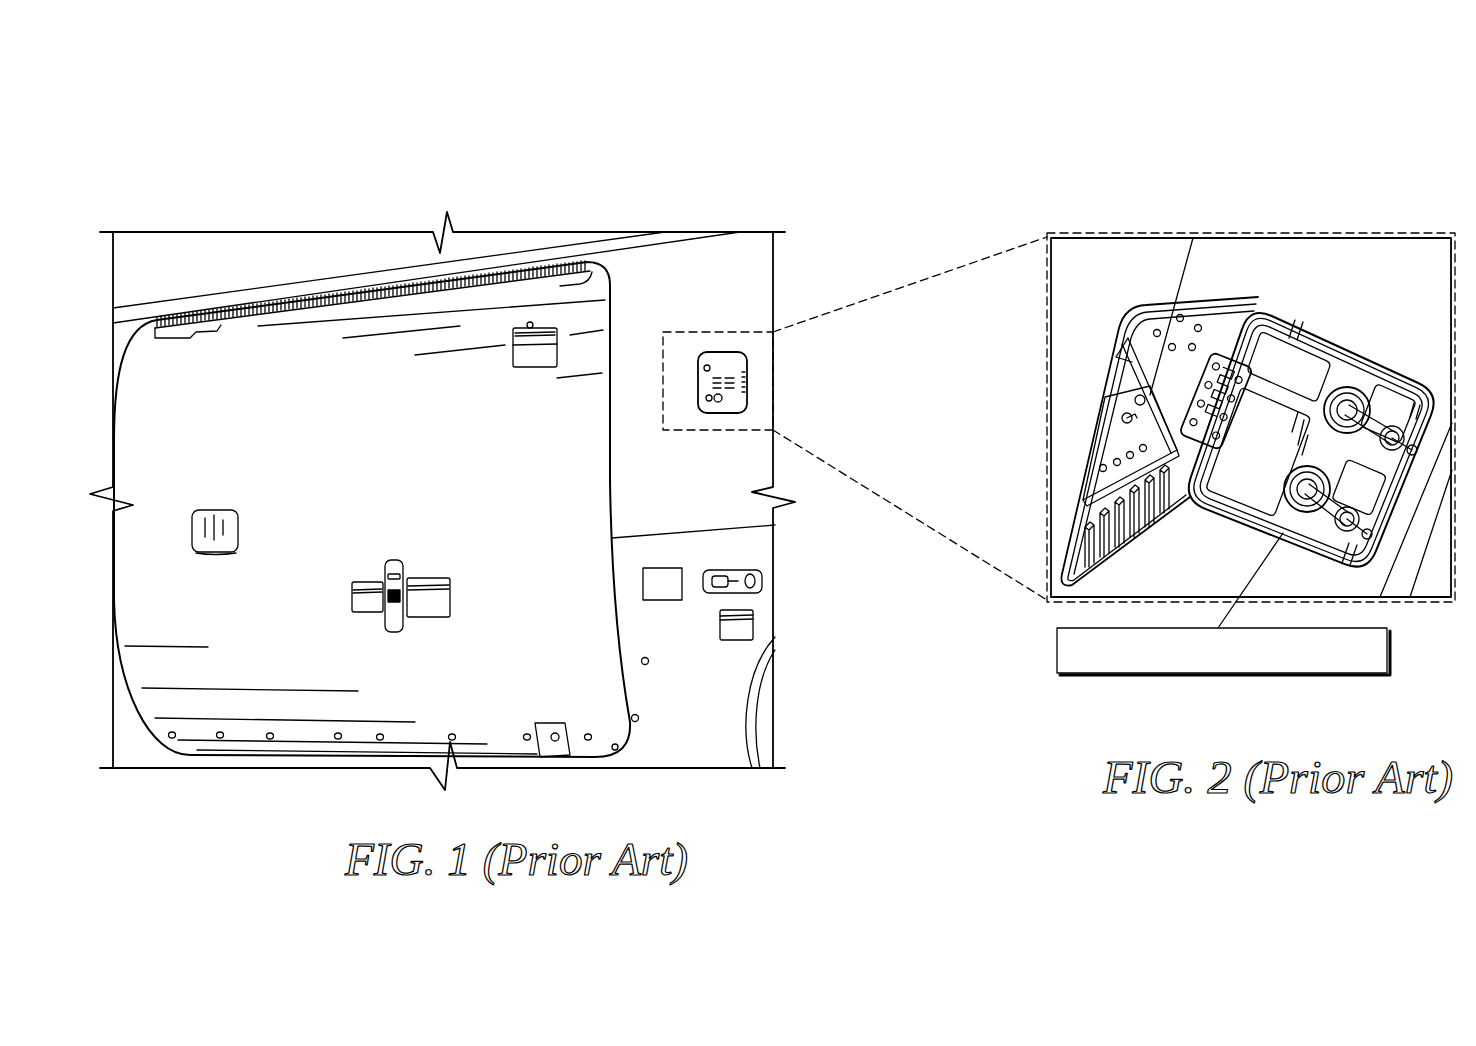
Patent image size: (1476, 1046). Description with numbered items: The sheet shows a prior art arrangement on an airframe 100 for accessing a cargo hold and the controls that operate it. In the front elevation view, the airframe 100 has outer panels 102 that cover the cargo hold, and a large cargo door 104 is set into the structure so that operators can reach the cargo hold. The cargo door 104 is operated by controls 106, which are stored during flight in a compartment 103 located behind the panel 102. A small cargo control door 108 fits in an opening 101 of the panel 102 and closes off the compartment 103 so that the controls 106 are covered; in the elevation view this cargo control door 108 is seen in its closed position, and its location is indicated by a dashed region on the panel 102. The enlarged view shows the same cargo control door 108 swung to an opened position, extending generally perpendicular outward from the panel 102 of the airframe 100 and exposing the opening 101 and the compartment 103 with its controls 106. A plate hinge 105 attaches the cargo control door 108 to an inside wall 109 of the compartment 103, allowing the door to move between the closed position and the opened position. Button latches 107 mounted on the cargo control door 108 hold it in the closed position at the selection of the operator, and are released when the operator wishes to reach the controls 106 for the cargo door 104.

In FIG. 1, the airframe 100 is at (741, 177).
In FIG. 2, the airframe 100 is at (1115, 137).
In FIG. 2, the opening 101 is at (1131, 306).
In FIG. 1, the outer panels 102 is at (668, 290).
In FIG. 2, the outer panels 102 is at (1217, 268).
In FIG. 2, the compartment 103 is at (1240, 314).
In FIG. 1, the cargo door 104 is at (898, 809).
In FIG. 2, the plate hinge 105 is at (1257, 365).
In FIG. 1, the controls 106 is at (728, 374).
In FIG. 2, the controls 106 is at (1155, 375).
In FIG. 2, the button latches 107 is at (1359, 493).
In FIG. 1, the cargo control door 108 is at (733, 357).
In FIG. 2, the cargo control door 108 is at (1057, 652).
In FIG. 2, the inside wall 109 is at (1177, 383).